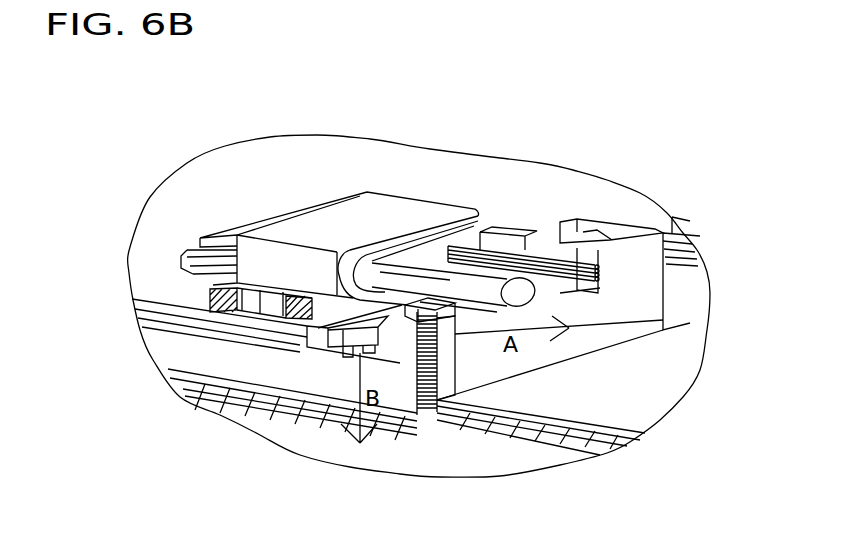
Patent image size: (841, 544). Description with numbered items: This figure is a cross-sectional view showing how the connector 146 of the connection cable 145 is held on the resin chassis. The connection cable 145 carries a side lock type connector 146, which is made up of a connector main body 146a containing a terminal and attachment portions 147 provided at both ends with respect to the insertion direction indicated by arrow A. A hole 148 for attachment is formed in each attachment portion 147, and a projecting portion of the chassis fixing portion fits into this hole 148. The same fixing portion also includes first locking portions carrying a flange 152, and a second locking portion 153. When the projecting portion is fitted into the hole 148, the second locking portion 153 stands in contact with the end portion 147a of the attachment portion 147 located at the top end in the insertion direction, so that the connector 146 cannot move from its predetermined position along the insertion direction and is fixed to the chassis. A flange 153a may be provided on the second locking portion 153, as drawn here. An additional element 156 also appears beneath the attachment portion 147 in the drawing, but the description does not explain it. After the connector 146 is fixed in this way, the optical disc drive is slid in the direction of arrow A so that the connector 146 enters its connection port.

The connection cable 145 is at (440, 267).
The connector 146 is at (309, 220).
The connector main body 146a is at (361, 205).
The attachment portion 147 is at (507, 234).
The end portion 147a is at (315, 305).
The hole 148 is at (260, 303).
The flange 152 is at (597, 235).
The second locking portion 153 is at (430, 317).
The flange 153a is at (405, 318).
The bracket 156 is at (342, 347).